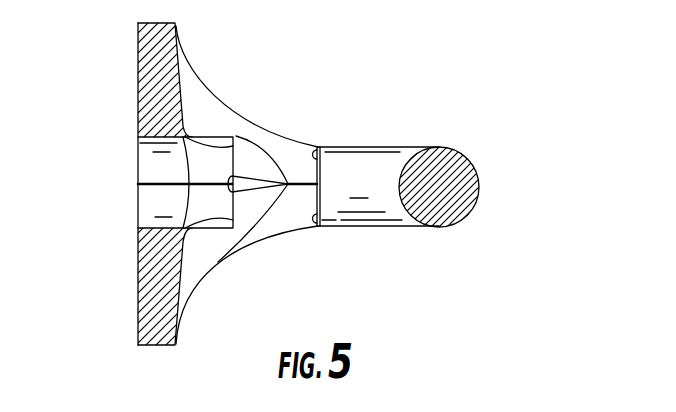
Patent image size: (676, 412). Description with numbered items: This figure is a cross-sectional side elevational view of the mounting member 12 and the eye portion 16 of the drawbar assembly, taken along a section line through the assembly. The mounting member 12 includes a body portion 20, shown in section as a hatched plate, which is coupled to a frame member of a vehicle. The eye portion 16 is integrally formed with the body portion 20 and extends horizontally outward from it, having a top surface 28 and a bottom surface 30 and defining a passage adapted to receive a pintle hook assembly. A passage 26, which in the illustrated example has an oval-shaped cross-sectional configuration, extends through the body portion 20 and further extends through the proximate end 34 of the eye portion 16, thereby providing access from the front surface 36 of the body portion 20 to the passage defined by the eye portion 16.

The mounting member 12 is at (134, 69).
The eye portion 16 is at (481, 187).
The body portion 20 is at (152, 95).
The passage 26 is at (247, 157).
The top surface 28 is at (383, 146).
The bottom surface 30 is at (363, 228).
The proximate end 34 is at (245, 118).
The front surface 36 is at (137, 120).